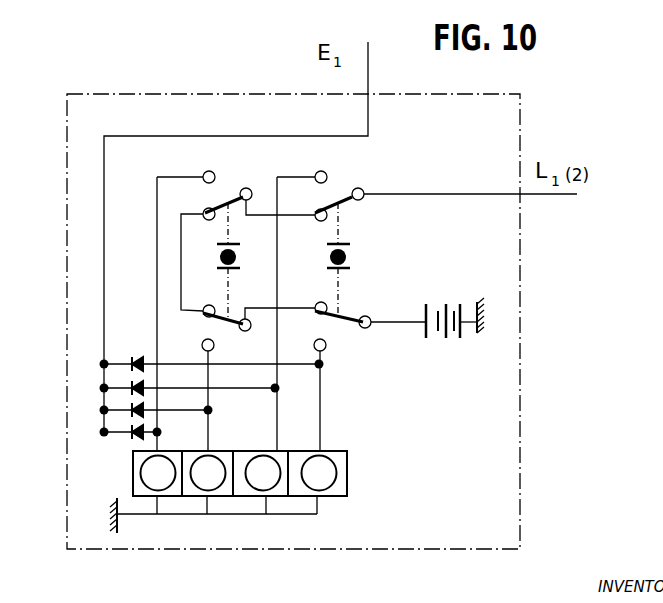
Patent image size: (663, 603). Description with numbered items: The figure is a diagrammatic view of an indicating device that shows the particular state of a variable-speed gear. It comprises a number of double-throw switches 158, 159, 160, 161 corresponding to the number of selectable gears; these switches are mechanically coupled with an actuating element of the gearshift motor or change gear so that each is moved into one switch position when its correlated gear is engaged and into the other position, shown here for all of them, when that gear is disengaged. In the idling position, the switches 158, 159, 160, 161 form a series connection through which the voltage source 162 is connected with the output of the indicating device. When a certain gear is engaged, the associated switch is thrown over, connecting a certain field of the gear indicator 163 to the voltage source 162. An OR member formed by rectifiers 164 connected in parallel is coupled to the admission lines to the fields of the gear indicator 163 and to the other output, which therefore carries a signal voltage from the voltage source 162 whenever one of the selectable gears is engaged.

The double-throw switch 158 is at (347, 325).
The double-throw switch 159 is at (350, 198).
The double-throw switch 160 is at (213, 319).
The double-throw switch 161 is at (230, 202).
The voltage source 162 is at (440, 302).
The gear indicator 163 is at (347, 472).
The rectifiers 164 is at (115, 398).